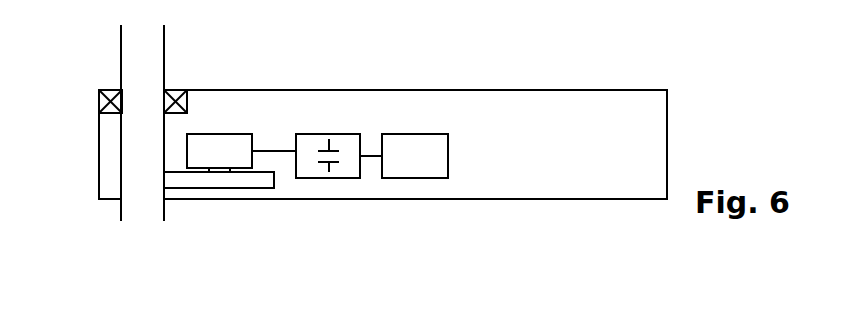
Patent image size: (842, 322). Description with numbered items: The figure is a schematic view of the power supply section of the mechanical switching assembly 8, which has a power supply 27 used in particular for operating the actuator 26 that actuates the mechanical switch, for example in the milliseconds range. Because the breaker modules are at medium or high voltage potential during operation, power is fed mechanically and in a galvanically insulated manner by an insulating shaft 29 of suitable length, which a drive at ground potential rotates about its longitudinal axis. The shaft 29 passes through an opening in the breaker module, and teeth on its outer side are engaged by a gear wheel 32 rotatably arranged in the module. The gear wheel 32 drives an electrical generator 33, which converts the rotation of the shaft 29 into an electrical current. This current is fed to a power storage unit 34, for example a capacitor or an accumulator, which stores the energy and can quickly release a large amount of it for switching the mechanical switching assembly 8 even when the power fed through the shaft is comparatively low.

The mechanical switching assembly 8 is at (630, 65).
The actuator 26 is at (440, 111).
The power supply 27 is at (299, 113).
The insulating shaft 29 is at (83, 110).
The gear wheel 32 is at (219, 221).
The electrical generator 33 is at (239, 108).
The power storage unit 34 is at (346, 201).